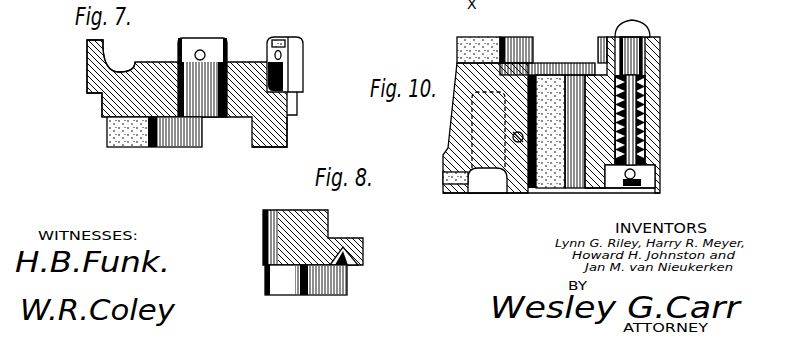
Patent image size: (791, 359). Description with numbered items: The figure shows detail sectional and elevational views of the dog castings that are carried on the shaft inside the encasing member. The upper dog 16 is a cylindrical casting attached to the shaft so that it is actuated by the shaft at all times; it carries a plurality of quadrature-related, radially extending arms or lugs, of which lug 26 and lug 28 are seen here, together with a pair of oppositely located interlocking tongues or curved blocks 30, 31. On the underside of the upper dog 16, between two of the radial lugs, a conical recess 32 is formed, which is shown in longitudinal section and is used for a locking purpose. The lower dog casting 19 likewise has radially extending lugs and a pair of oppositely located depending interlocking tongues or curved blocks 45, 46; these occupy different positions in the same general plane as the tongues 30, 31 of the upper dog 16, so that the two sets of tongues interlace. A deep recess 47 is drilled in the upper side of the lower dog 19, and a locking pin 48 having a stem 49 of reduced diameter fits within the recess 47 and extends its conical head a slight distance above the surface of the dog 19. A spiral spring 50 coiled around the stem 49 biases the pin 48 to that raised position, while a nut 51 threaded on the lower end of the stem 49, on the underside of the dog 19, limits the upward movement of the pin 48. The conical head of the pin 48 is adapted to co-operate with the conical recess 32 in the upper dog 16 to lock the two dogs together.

In FIG. 7, the upper dog 16 is at (118, 107).
In FIG. 8, the upper dog 16 is at (331, 249).
In FIG. 10, the lower dog casting 19 is at (453, 126).
In FIG. 7, the radially-extending arm or lug 26 is at (96, 73).
In FIG. 7, the radially-extending arm or lug 28 is at (296, 48).
In FIG. 7, the interlocking tongue or curved block 30 is at (142, 148).
In FIG. 8, the interlocking tongue or curved block 30 is at (307, 291).
In FIG. 7, the interlocking tongue or curved block 31 is at (256, 148).
In FIG. 8, the conical recess 32 is at (351, 268).
In FIG. 10, the depending interlocking tongue or curved block 45 is at (466, 51).
In FIG. 10, the depending interlocking tongue or curved block 46 is at (603, 37).
In FIG. 10, the deep recess 47 is at (646, 80).
In FIG. 10, the locking pin 48 is at (636, 28).
In FIG. 10, the stem 49 is at (650, 135).
In FIG. 10, the spiral spring 50 is at (646, 118).
In FIG. 10, the nut 51 is at (628, 182).